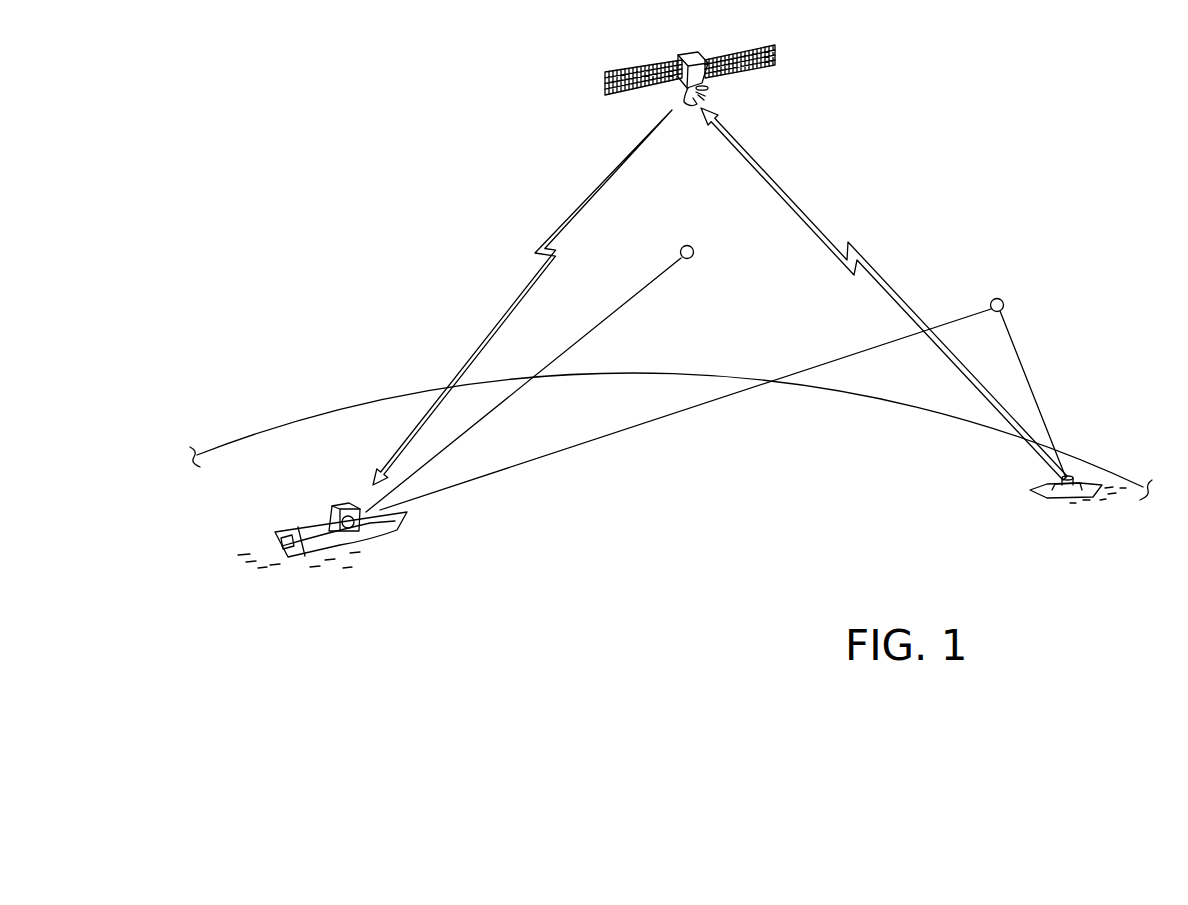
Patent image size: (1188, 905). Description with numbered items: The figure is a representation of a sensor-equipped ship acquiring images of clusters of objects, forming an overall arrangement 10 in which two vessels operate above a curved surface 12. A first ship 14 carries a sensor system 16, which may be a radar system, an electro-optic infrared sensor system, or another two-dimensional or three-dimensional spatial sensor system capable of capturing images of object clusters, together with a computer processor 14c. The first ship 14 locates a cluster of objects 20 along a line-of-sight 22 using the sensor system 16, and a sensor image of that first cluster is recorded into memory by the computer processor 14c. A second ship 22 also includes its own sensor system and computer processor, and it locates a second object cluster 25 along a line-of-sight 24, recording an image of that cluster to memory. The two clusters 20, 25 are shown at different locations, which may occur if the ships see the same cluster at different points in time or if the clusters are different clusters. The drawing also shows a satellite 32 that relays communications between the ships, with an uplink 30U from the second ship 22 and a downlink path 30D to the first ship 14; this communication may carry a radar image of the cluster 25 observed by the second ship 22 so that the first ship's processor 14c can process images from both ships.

The communication system 10 is at (773, 478).
The earth surface / horizon 12 is at (353, 405).
The first ship 14 is at (300, 529).
The computer processor 14c is at (292, 549).
The sensor system 16 is at (340, 504).
The cluster of objects 20 is at (692, 247).
The second ship 22 is at (632, 300).
The line-of-sight 24 is at (1032, 392).
The object cluster 25 is at (1002, 301).
The path 30D is at (608, 180).
The satellite uplink 30U is at (768, 175).
The satellite 32 is at (690, 53).